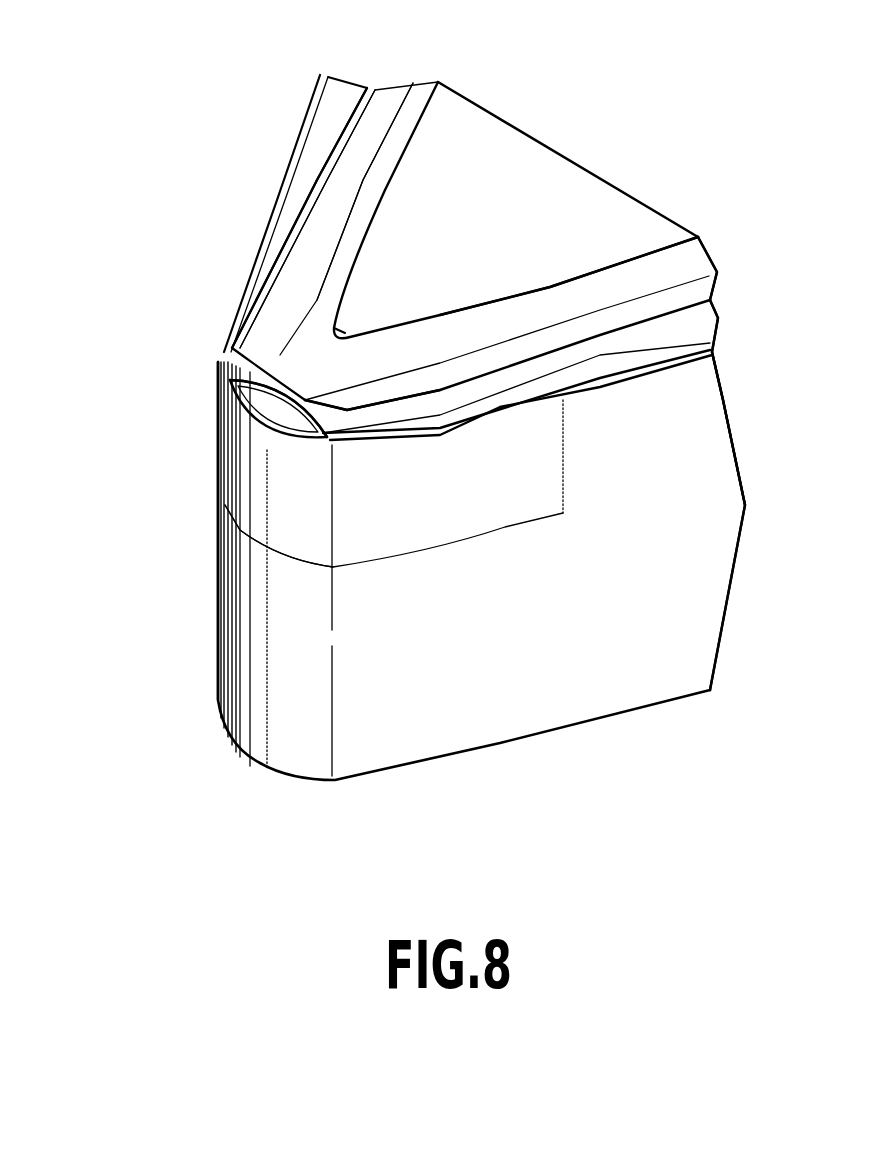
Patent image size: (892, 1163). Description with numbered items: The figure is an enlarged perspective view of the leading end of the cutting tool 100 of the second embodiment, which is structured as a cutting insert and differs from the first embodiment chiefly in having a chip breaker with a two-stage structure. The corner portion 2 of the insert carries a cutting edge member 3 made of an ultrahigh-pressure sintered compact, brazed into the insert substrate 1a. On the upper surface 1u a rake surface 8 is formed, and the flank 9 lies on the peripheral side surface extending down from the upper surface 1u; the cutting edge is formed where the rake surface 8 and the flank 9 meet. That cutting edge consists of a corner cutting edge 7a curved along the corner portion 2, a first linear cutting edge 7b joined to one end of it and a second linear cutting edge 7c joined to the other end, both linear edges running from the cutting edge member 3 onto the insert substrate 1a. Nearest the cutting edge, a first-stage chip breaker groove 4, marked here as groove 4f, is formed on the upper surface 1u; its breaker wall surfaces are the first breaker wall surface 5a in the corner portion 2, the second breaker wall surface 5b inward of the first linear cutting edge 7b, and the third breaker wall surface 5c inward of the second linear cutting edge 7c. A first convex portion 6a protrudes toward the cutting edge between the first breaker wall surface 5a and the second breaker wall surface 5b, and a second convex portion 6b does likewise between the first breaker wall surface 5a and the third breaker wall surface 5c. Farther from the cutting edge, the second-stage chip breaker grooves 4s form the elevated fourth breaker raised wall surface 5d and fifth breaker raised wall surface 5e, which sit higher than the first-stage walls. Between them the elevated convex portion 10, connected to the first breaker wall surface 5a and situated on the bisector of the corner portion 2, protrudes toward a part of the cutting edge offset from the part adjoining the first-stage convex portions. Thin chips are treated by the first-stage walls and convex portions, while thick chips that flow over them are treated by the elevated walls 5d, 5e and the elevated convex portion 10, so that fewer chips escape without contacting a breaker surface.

The cutting tool 100 is at (487, 220).
The upper surface 1u is at (380, 280).
The insert substrate 1a is at (570, 233).
The chip breaker groove on the second stage 4s is at (405, 107).
The chip breaker groove 4 is at (566, 484).
The chip breaker groove on the first stage 4f is at (703, 343).
The cutting edge member 3 is at (350, 318).
The second linear cutting edge 7c is at (360, 242).
The fifth breaker raised wall surface 5e is at (345, 250).
The rake surface 8 is at (330, 315).
The third breaker wall surface 5c is at (333, 353).
The elevated convex portion 10 is at (305, 368).
The second convex portion 6b is at (235, 378).
The first breaker wall surface 5a is at (245, 388).
The corner portion 2 is at (275, 410).
The corner cutting edge 7a is at (290, 430).
The flank 9 is at (227, 550).
The first convex portion 6a is at (340, 432).
The second breaker wall surface 5b is at (400, 413).
The first linear cutting edge 7b is at (417, 433).
The fourth breaker raised wall surface 5d is at (430, 347).